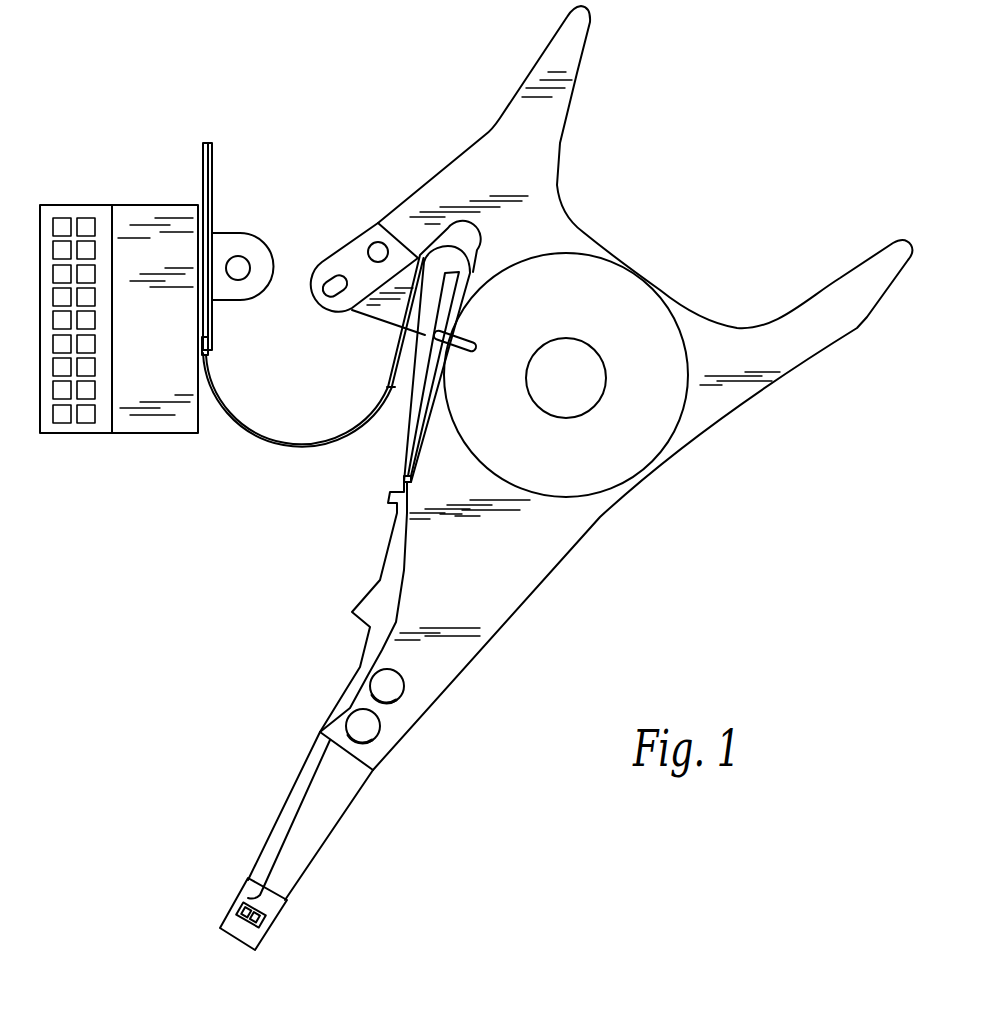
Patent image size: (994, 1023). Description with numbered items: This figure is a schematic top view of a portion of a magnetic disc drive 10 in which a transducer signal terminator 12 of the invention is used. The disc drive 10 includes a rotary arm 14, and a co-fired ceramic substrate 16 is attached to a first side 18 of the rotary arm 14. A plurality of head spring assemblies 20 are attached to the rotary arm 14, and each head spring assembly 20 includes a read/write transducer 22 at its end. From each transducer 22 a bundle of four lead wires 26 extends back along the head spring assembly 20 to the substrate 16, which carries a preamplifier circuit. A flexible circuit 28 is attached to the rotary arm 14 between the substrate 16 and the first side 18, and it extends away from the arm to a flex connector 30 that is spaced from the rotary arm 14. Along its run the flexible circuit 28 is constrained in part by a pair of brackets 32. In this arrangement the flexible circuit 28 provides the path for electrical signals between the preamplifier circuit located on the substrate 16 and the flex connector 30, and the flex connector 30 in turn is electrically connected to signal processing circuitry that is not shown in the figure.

The disc drive 10 is at (416, 58).
The transducer signal terminator 12 is at (404, 440).
The rotary arm 14 is at (548, 556).
The co-fired ceramic substrate 16 is at (408, 467).
The first side 18 is at (432, 410).
The head spring assembly 20 is at (316, 841).
The read/write transducer 22 is at (264, 938).
The lead wires 26 is at (357, 697).
The flexible circuit 28 is at (433, 387).
The flex connector 30 is at (70, 205).
The brackets 32 is at (326, 262).